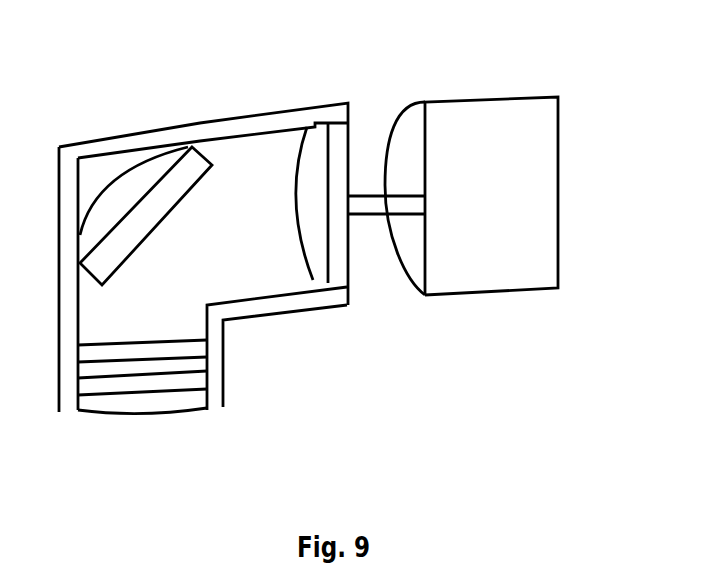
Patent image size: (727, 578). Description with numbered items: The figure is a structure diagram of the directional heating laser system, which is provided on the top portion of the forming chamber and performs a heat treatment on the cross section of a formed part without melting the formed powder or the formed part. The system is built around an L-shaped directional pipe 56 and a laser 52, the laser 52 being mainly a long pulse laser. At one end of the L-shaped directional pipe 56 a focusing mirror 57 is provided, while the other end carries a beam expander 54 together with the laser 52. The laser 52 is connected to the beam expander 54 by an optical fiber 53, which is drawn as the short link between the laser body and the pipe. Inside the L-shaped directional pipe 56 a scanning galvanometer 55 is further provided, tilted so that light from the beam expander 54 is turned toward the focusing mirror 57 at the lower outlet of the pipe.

The laser 52 is at (518, 198).
The optical fiber 53 is at (363, 223).
The beam expander 54 is at (338, 177).
The scanning galvanometer 55 is at (167, 202).
The L-shaped directional pipe 56 is at (68, 182).
The focusing mirror 57 is at (138, 380).